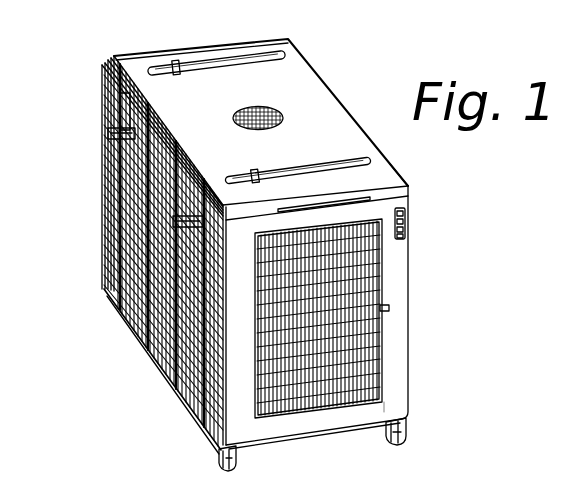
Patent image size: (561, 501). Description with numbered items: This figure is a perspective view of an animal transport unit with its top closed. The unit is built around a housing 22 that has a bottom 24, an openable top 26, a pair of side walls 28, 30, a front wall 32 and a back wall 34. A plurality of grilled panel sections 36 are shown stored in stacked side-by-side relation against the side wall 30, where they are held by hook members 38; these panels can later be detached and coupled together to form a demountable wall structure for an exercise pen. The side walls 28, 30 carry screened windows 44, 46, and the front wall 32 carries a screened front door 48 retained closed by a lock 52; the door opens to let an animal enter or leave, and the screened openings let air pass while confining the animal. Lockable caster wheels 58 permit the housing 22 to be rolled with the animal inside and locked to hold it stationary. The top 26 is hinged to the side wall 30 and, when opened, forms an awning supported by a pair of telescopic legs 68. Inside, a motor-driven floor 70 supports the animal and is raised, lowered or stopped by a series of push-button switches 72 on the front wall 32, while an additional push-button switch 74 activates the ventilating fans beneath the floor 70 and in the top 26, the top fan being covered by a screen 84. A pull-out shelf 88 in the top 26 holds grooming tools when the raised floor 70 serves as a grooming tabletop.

The housing 22 is at (122, 43).
The bottom 24 is at (284, 428).
The openable top 26 is at (392, 191).
The side wall 28 is at (402, 376).
The side wall 30 is at (197, 376).
The front wall 32 is at (387, 353).
The back wall 34 is at (188, 38).
The grilled panel sections 36 is at (97, 188).
The hook members 38 is at (110, 116).
The screened window 44 is at (352, 256).
The screened window 46 is at (177, 318).
The front door 48 is at (372, 322).
The lock 52 is at (381, 300).
The lockable caster wheels 58 is at (220, 457).
The telescopic legs 68 is at (341, 148).
The motor-driven floor 70 is at (338, 386).
The push-button switches 72 is at (395, 220).
The push-button switch 74 is at (396, 232).
The screen 84 is at (236, 103).
The pull-out shelf 88 is at (400, 180).